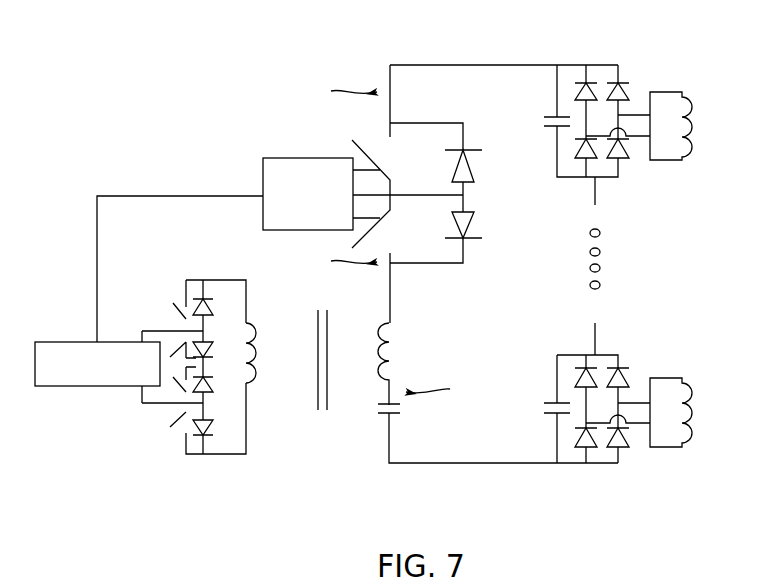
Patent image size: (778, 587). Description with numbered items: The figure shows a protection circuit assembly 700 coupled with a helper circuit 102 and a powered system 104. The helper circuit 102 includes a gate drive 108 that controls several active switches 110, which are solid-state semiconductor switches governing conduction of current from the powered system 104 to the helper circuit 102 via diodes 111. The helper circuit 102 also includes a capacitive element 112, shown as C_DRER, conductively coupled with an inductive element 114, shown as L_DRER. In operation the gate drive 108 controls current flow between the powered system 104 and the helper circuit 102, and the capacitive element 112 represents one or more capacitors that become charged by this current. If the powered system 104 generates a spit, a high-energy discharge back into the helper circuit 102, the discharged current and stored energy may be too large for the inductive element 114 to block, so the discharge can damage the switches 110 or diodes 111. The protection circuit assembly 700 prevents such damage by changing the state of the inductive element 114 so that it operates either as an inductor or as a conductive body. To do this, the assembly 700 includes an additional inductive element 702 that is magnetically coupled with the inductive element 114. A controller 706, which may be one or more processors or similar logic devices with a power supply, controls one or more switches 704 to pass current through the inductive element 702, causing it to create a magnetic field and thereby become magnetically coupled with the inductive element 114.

The helper circuit 102 is at (543, 53).
The powered system 104 is at (710, 483).
The gate drive 108 is at (287, 157).
The active switches 110 is at (374, 151).
The diodes 111 is at (478, 171).
The capacitive element 112 is at (400, 414).
The inductive element 114 is at (371, 323).
The protection circuit assembly 700 is at (515, 483).
The additional inductive element 702 is at (292, 349).
The switches 704 is at (217, 303).
The controller 706 is at (97, 388).